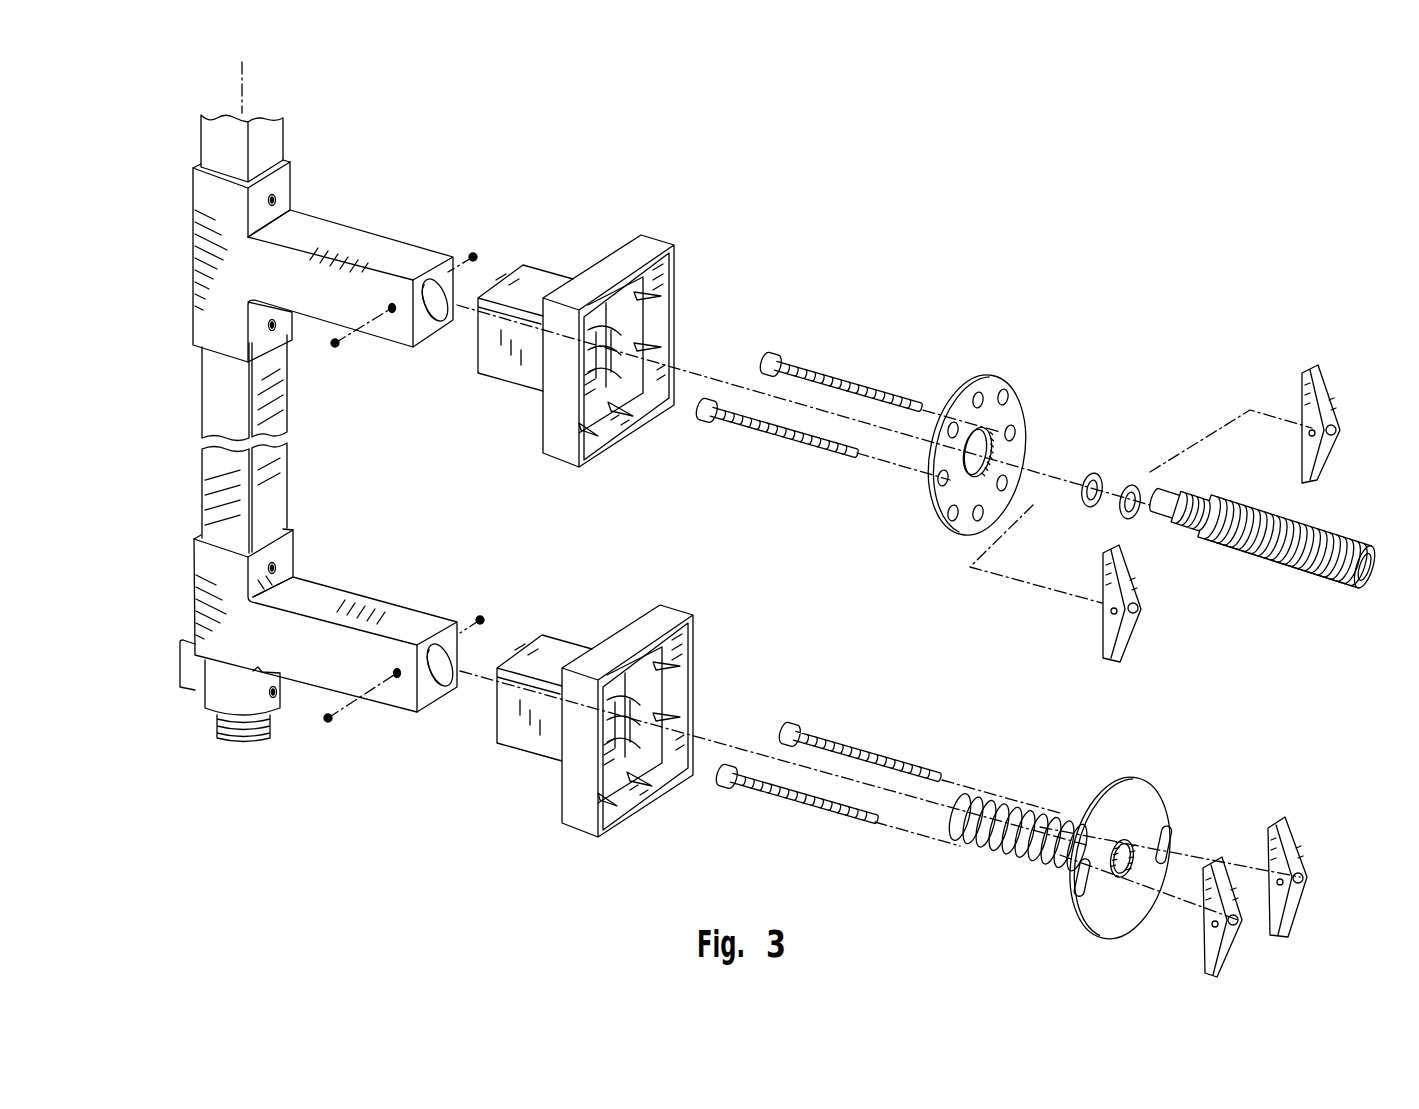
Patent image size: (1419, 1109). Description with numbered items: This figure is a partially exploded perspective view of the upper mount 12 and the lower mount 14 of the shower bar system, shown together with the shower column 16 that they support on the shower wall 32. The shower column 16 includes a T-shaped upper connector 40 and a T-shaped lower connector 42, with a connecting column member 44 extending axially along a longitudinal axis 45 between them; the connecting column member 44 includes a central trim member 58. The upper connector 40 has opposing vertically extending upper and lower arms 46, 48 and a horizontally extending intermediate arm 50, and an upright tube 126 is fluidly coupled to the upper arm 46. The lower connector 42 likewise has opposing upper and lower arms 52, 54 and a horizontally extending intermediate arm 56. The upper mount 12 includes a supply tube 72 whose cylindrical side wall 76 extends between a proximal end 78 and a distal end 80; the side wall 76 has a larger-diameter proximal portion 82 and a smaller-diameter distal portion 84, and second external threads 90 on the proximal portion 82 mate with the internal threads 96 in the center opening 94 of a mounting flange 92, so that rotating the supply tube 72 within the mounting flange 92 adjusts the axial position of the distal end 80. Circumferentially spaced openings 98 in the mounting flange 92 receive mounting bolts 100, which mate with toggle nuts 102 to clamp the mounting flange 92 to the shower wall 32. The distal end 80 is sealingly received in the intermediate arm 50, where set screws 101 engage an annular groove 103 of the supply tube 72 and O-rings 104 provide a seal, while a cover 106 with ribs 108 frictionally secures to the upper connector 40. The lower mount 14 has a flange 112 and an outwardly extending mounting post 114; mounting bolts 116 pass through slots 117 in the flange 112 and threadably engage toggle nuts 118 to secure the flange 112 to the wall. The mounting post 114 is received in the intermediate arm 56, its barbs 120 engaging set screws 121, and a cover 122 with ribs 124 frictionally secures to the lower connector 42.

The upper mount 12 is at (1102, 228).
The lower mount 14 is at (1105, 739).
The shower column 16 is at (201, 413).
The shower wall 32 is at (1148, 873).
The upper connector 40 is at (303, 280).
The lower connector 42 is at (303, 608).
The connecting column member 44 is at (274, 493).
The longitudinal axis 45 is at (243, 82).
The upper arm 46 is at (287, 190).
The lower arm 48 is at (278, 338).
The intermediate arm 50 is at (372, 244).
The upper arm 52 is at (284, 551).
The lower arm 54 is at (228, 658).
The intermediate arm 56 is at (424, 624).
The central trim member 58 is at (274, 430).
The supply tube 72 is at (1234, 533).
The cylindrical side wall 76 is at (1306, 583).
The proximal end 78 is at (1366, 596).
The distal end 80 is at (1164, 494).
The proximal portion 82 is at (1258, 562).
The distal portion 84 is at (1181, 496).
The second external threads 90 is at (1232, 540).
The mounting flange 92 is at (967, 415).
The center opening 94 is at (978, 452).
The internal threads 96 is at (978, 451).
The circumferentially spaced openings 98 is at (988, 372).
The mounting bolts 100 is at (825, 437).
The set screws 101 is at (478, 256).
The toggle nuts 102 is at (1328, 392).
The annular groove 103 is at (1214, 500).
The O-rings 104 is at (1090, 507).
The cover 106 is at (616, 305).
The ribs 108 is at (667, 364).
The flange 112 is at (1075, 905).
The mounting post 114 is at (1003, 813).
The mounting bolts 116 is at (840, 817).
The slots 117 is at (1097, 900).
The toggle nuts 118 is at (1292, 914).
The barbs 120 is at (1046, 808).
The set screws 121 is at (486, 618).
The cover 122 is at (635, 674).
The ribs 124 is at (674, 730).
The upright tube 126 is at (275, 147).